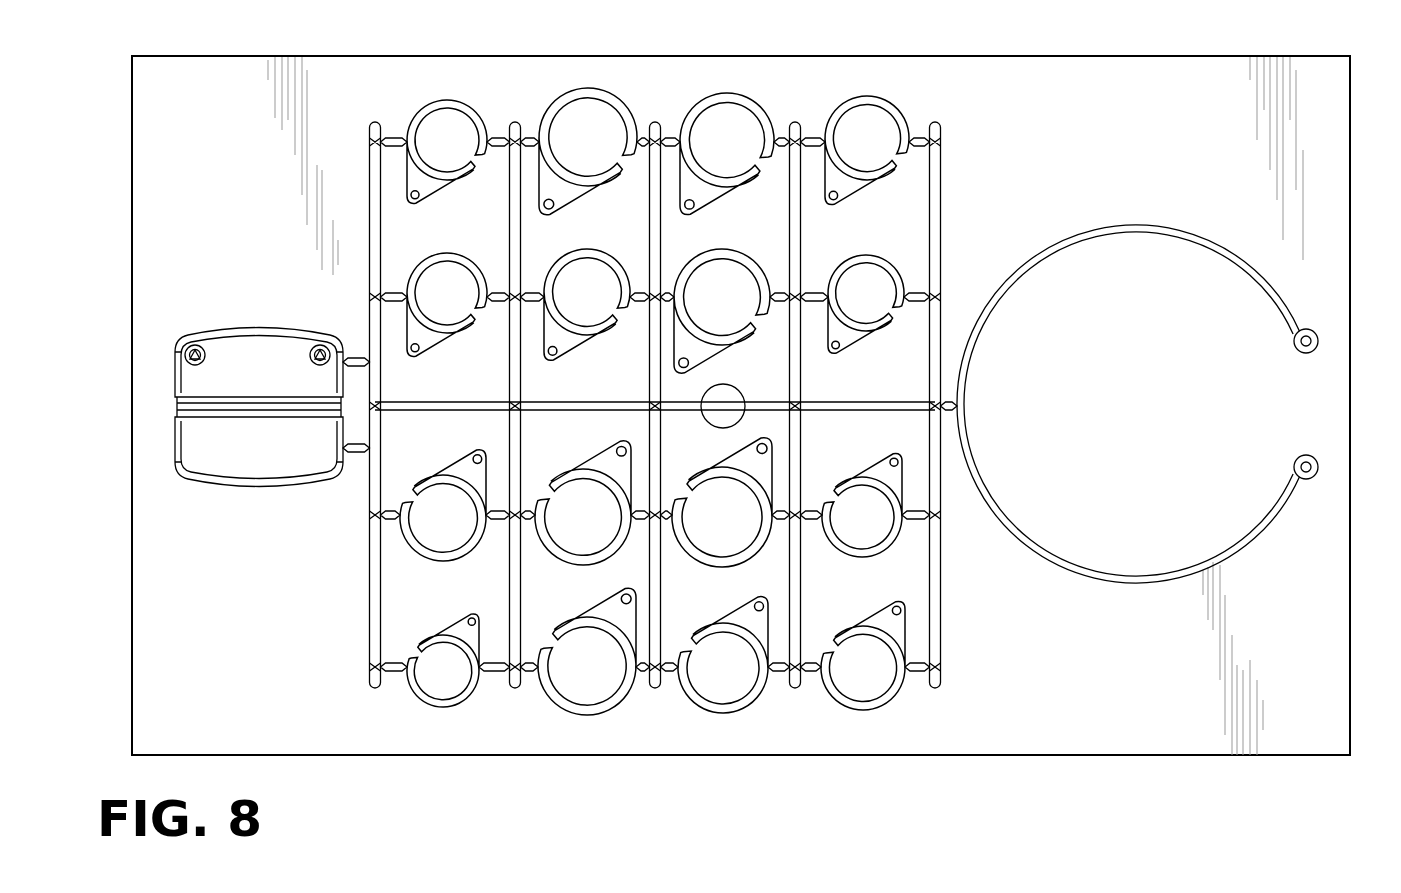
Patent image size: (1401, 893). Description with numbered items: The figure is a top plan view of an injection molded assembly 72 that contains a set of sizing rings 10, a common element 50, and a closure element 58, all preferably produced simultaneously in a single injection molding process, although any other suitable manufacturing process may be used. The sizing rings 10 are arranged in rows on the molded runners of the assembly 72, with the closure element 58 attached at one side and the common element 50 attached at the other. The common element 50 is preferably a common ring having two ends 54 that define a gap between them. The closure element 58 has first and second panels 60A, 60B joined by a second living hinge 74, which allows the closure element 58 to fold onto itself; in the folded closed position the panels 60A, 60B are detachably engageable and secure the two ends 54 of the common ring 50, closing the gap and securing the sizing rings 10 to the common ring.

The sizing ring 10 is at (878, 700).
The injection molded assembly 72 is at (1003, 190).
The common element 50 is at (1176, 453).
The ends 54 is at (1345, 414).
The closure element 58 is at (209, 424).
The first panel 60A is at (263, 458).
The second panel 60B is at (259, 356).
The second living hinge 74 is at (176, 404).